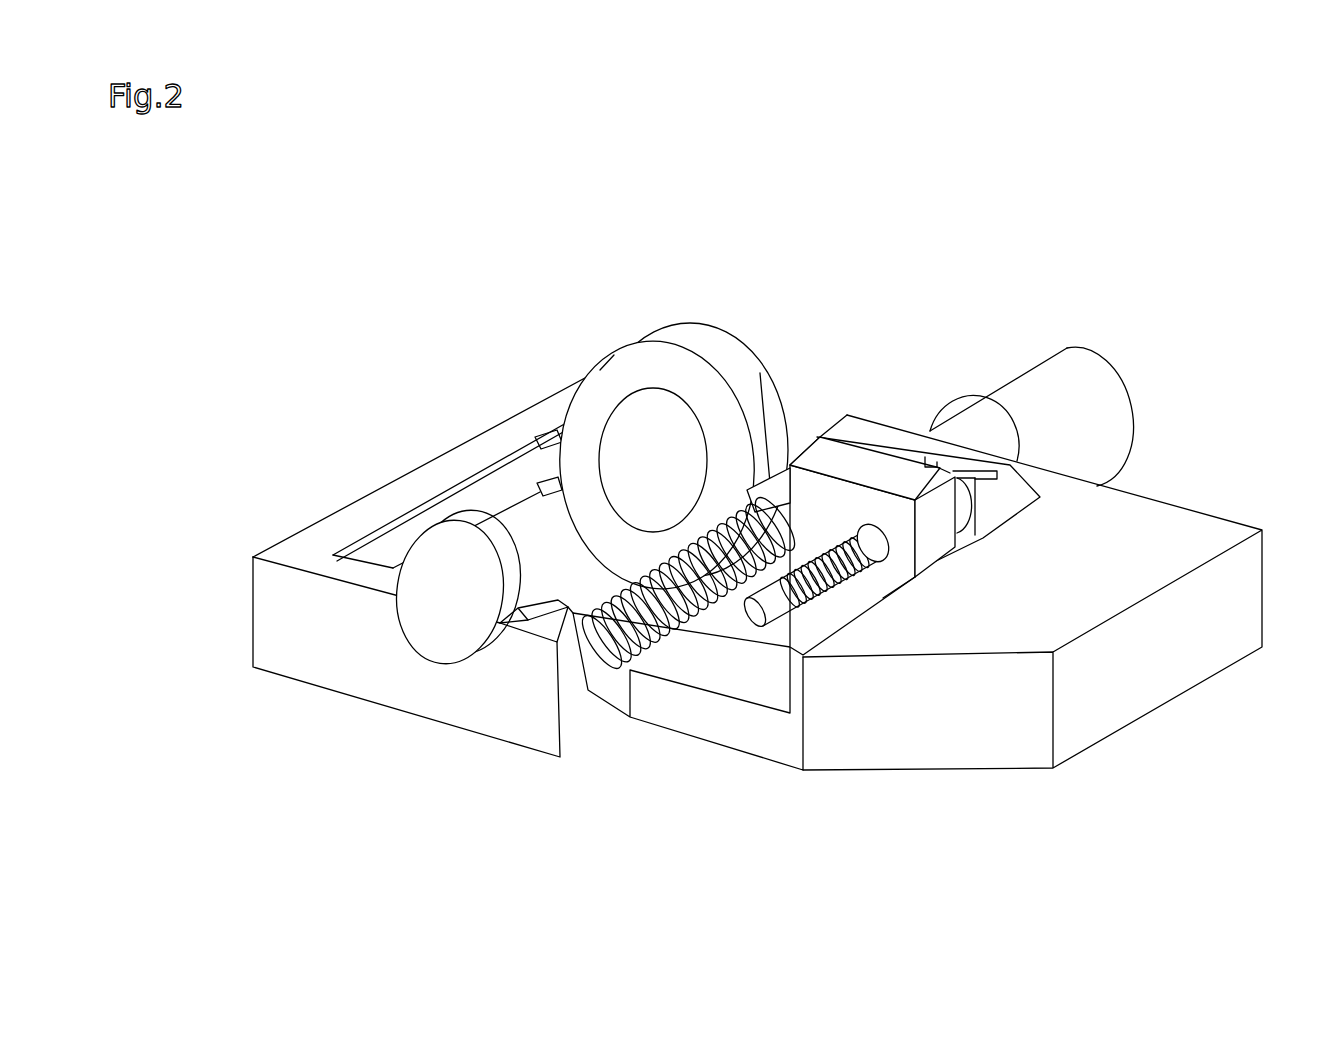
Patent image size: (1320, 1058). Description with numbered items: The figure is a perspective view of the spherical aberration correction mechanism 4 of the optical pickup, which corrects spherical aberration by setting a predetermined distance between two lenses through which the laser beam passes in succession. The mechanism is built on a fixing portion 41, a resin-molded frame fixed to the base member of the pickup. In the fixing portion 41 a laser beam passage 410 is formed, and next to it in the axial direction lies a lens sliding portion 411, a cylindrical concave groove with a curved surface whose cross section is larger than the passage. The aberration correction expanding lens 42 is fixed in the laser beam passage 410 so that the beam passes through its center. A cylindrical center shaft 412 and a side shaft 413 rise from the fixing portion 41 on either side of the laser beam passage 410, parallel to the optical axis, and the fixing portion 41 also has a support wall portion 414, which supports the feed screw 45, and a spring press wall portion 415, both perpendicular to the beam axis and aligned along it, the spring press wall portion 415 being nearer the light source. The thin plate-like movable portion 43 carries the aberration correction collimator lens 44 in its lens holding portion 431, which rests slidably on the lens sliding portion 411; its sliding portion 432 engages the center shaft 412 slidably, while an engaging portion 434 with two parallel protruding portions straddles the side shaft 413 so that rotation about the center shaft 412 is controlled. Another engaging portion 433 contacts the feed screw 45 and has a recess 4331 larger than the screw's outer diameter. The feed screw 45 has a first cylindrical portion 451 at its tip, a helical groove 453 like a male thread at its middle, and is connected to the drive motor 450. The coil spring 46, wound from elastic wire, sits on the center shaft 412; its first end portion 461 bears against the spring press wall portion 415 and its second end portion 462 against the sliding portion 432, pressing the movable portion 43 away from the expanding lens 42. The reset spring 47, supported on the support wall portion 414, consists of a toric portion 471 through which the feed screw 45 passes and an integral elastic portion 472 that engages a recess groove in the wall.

The spherical aberration correction mechanism 4 is at (343, 312).
The fixing portion 41 is at (308, 665).
The laser beam passage 410 is at (540, 622).
The lens sliding portion 411 is at (535, 530).
The center shaft 412 is at (657, 640).
The side shaft 413 is at (380, 545).
The support wall portion 414 is at (957, 455).
The spring press wall portion 415 is at (518, 610).
The aberration correction expanding lens 42 is at (450, 635).
The movable portion 43 is at (688, 342).
The lens holding portion 431 is at (592, 407).
The sliding portion 432 is at (773, 485).
The engaging portion 433 is at (890, 482).
The recess 4331 is at (871, 520).
The engaging portion 434 is at (556, 533).
The aberration correction collimator lens 44 is at (658, 440).
The feed screw 45 is at (836, 568).
The drive motor 450 is at (1108, 415).
The first cylindrical portion 451 is at (762, 623).
The helical groove 453 is at (805, 607).
The coil spring 46 is at (613, 685).
The first end portion 461 is at (557, 643).
The second end portion 462 is at (775, 473).
The reset spring 47 is at (963, 468).
The toric portion 471 is at (962, 500).
The elastic portion 472 is at (973, 497).